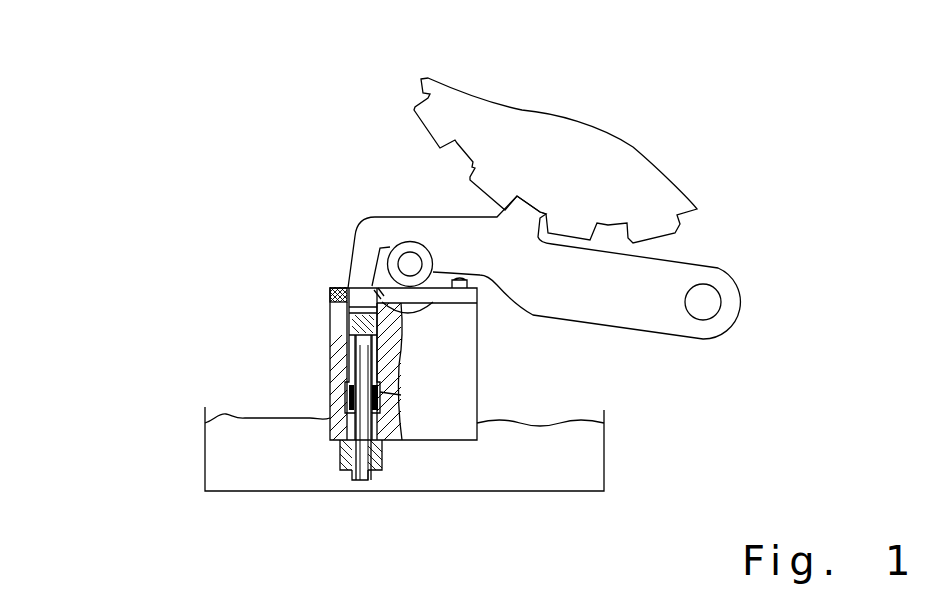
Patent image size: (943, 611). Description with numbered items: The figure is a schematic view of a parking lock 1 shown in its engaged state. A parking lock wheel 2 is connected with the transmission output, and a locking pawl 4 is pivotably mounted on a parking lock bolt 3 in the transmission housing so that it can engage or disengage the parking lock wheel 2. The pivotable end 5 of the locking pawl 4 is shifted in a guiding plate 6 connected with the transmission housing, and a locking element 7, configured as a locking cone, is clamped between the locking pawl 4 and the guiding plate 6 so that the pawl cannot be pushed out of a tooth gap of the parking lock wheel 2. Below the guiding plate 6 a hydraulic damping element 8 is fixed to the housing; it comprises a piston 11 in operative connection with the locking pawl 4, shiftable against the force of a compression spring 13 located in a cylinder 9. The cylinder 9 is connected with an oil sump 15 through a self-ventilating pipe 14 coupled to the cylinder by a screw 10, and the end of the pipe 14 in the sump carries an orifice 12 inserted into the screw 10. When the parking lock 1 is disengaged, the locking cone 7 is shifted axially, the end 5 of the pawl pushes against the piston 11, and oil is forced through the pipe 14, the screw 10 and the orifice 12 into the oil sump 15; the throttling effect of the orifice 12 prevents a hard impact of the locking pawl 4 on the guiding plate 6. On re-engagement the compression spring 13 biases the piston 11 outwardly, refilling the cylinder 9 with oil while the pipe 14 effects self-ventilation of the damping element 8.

The parking lock 1 is at (367, 199).
The parking lock wheel 2 is at (658, 191).
The parking lock bolt 3 is at (706, 308).
The locking pawl 4 is at (718, 266).
The pivotable end 5 is at (330, 300).
The guiding plate 6 is at (331, 287).
The locking element 7 is at (410, 252).
The hydraulic damping element 8 is at (316, 376).
The cylinder 9 is at (477, 380).
The screw 10 is at (343, 448).
The piston 11 is at (333, 315).
The orifice 12 is at (361, 480).
The compression spring 13 is at (340, 330).
The self-ventilating pipe 14 is at (377, 390).
The oil sump 15 is at (223, 458).